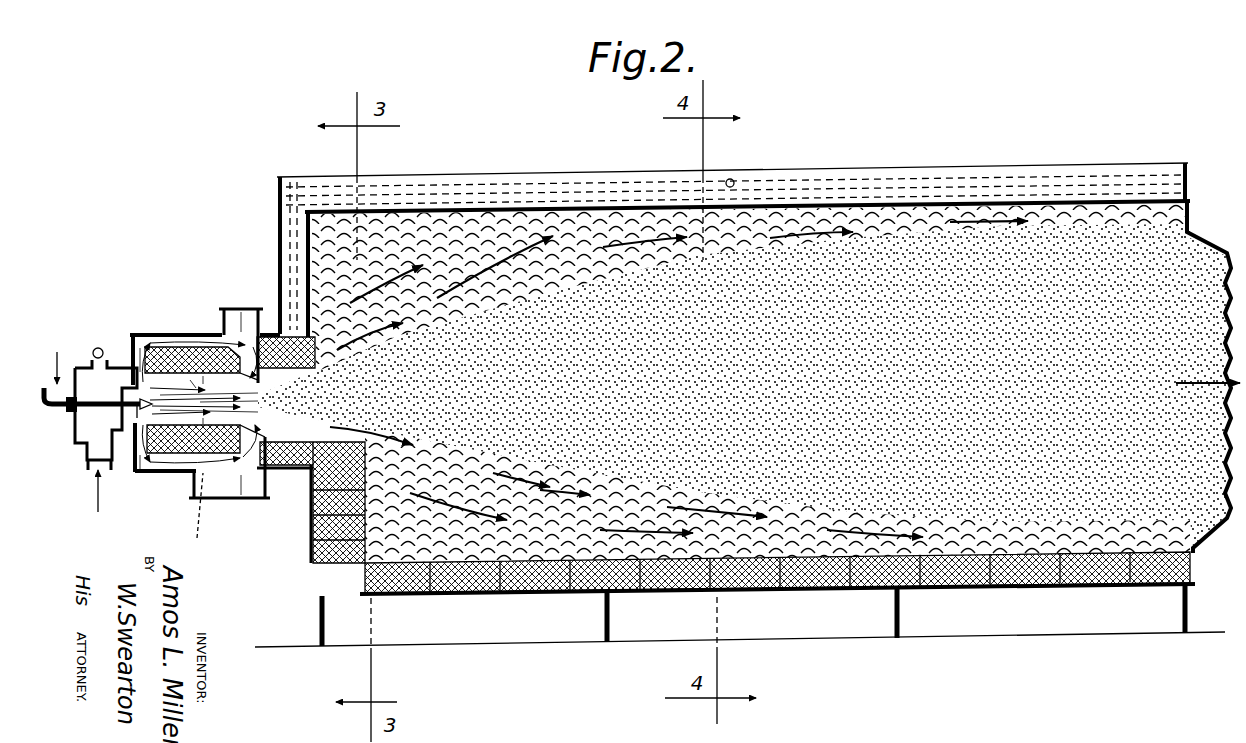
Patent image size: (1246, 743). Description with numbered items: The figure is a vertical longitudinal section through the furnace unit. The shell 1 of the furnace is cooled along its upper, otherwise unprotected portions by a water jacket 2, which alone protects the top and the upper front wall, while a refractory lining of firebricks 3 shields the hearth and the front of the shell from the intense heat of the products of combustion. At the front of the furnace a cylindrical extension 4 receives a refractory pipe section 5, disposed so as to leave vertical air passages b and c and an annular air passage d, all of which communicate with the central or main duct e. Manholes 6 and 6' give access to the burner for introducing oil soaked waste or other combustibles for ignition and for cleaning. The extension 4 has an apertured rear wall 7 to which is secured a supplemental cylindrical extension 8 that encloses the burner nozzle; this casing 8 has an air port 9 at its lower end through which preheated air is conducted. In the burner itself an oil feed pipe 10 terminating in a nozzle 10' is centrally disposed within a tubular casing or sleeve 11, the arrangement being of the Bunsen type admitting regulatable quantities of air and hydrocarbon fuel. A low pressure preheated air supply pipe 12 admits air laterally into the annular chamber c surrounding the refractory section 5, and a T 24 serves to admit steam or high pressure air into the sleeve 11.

The shell 1 is at (318, 558).
The water jacket 2 is at (303, 177).
The firebricks 3 is at (330, 505).
The cylindrical extension 4 is at (181, 333).
The pipe section 5 is at (170, 333).
The manhole 6 is at (241, 296).
The manhole 6' is at (229, 485).
The apertured rear wall 7 is at (170, 473).
The supplemental cylindrical extension 8 is at (118, 370).
The air port 9 is at (90, 466).
The oil feed pipe 10 is at (92, 367).
The nozzle 10' is at (62, 421).
The tubular casing or sleeve 11 is at (97, 418).
The low pressure pre-heated air supply pipe 12 is at (188, 516).
The T 24 is at (97, 346).
The vertical air passage b is at (143, 333).
The vertical air passage c is at (250, 310).
The annular air passage d is at (203, 333).
The central or main duct e is at (197, 333).